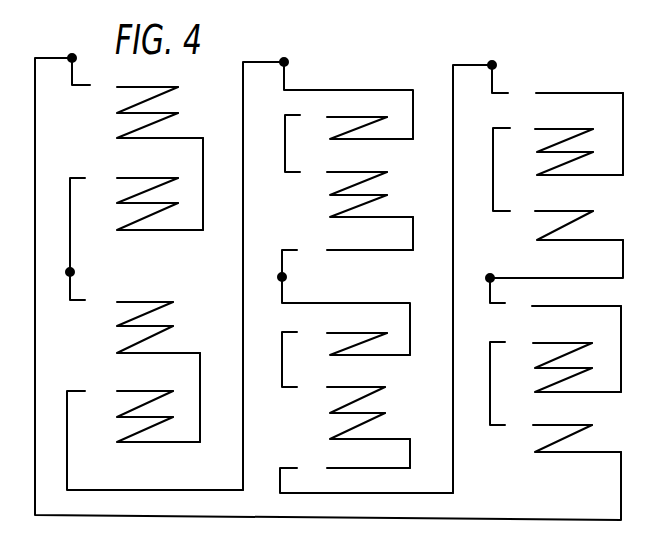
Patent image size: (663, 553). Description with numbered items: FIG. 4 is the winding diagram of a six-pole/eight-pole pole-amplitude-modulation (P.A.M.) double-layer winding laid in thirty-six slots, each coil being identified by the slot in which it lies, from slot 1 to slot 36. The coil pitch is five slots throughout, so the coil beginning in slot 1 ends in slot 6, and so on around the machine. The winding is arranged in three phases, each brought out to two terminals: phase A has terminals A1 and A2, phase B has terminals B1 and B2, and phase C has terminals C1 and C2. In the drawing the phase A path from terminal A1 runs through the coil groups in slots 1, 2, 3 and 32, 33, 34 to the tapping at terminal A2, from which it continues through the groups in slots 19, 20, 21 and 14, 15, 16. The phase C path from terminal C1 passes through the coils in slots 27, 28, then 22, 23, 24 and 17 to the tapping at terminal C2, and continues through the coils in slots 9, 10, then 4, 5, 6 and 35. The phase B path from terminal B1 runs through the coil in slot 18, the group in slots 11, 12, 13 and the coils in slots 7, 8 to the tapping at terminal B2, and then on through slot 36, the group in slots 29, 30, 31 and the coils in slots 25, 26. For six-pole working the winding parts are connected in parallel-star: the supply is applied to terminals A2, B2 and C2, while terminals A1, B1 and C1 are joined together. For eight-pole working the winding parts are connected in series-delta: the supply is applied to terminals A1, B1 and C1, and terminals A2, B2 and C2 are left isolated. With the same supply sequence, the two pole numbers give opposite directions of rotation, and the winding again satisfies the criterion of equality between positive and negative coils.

The slot 1 is at (136, 87).
The slot 2 is at (135, 105).
The slot 3 is at (148, 131).
The slot 4 is at (344, 387).
The slot 5 is at (344, 406).
The slot 6 is at (356, 432).
The slot 7 is at (554, 211).
The slot 8 is at (569, 231).
The slot 9 is at (345, 333).
The slot 10 is at (356, 350).
The slot 11 is at (553, 129).
The slot 12 is at (553, 146).
The slot 13 is at (568, 169).
The slot 14 is at (130, 391).
The slot 15 is at (130, 410).
The slot 16 is at (144, 435).
The slot 17 is at (357, 250).
The slot 18 is at (567, 93).
The slot 19 is at (130, 302).
The slot 20 is at (130, 320).
The slot 21 is at (144, 345).
The slot 22 is at (344, 172).
The slot 23 is at (344, 189).
The slot 24 is at (357, 212).
The slot 25 is at (549, 425).
The slot 26 is at (564, 444).
The slot 27 is at (344, 117).
The slot 28 is at (357, 134).
The slot 29 is at (549, 343).
The slot 30 is at (549, 361).
The slot 31 is at (564, 386).
The slot 32 is at (131, 178).
The slot 33 is at (131, 196).
The slot 34 is at (144, 222).
The slot 35 is at (354, 468).
The slot 36 is at (564, 306).
The phase A first terminal A1 is at (86, 66).
The phase A second terminal A2 is at (85, 273).
The phase B first terminal B1 is at (507, 73).
The phase B second terminal B2 is at (480, 285).
The phase C first terminal C1 is at (346, 95).
The phase C second terminal C2 is at (297, 278).